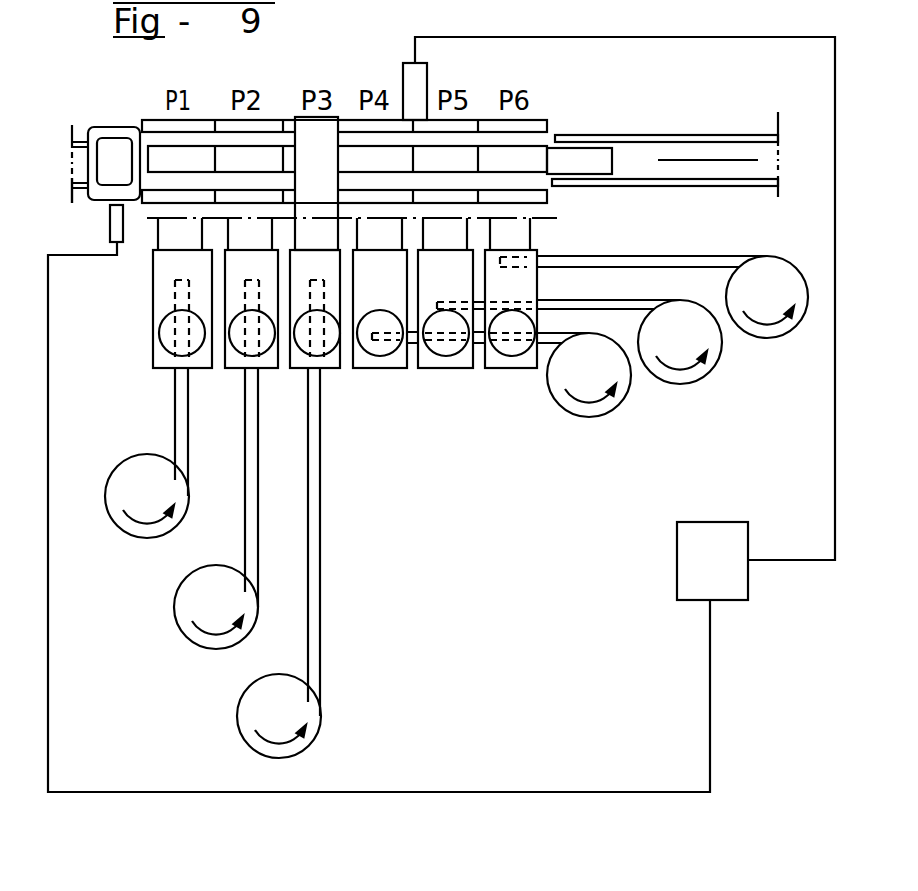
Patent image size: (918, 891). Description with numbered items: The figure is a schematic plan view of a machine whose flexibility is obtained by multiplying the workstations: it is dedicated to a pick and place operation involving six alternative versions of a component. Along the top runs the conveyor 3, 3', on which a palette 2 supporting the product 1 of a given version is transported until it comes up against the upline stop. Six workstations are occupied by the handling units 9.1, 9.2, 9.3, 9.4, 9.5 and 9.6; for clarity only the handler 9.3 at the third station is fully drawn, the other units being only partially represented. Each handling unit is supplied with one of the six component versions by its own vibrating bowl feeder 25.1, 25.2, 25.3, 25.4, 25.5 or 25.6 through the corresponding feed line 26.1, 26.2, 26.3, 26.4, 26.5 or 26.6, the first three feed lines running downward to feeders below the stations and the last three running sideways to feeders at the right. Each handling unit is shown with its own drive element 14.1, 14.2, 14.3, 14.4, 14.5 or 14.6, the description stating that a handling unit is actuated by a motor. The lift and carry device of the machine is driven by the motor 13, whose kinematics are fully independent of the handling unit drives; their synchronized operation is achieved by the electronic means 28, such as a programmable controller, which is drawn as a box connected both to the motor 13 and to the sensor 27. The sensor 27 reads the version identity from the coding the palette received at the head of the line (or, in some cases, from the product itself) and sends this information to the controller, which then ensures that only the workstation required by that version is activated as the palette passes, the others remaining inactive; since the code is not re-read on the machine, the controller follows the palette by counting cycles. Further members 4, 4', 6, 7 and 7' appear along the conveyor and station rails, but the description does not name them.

The product 1 is at (108, 150).
The palette 2 is at (122, 128).
The conveyor 3 is at (61, 145).
The conveyor 3' is at (56, 211).
The guide rod 4 is at (665, 140).
The guide rod lower bar 4' is at (665, 211).
The slide block 6 is at (578, 162).
The upper guide rail 7 is at (359, 89).
The lower guide rail 7' is at (366, 228).
The motor 13 is at (418, 80).
The sensor 27 is at (110, 227).
The electronic means 28 is at (694, 568).
The handling unit 9.1 is at (162, 307).
The handling unit 9.2 is at (237, 280).
The handling unit 9.3 is at (300, 258).
The handling unit 9.4 is at (363, 358).
The handling unit 9.5 is at (425, 358).
The handling unit 9.6 is at (492, 358).
The feed wheel 14.1 is at (172, 340).
The feed wheel 14.2 is at (238, 347).
The feed wheel 14.3 is at (300, 347).
The feed wheel 14.4 is at (383, 347).
The feed wheel 14.5 is at (457, 347).
The feed wheel 14.6 is at (515, 345).
The vibrating bowl feeder 25.1 is at (120, 492).
The vibrating bowl feeder 25.2 is at (192, 592).
The vibrating bowl feeder 25.3 is at (250, 698).
The vibrating bowl feeder 25.4 is at (603, 410).
The vibrating bowl feeder 25.5 is at (698, 372).
The vibrating bowl feeder 25.6 is at (780, 327).
The feed line 26.1 is at (188, 447).
The feed line 26.2 is at (253, 518).
The feed line 26.3 is at (317, 575).
The feed line 26.4 is at (557, 332).
The feed line 26.5 is at (608, 305).
The feed line 26.6 is at (600, 256).